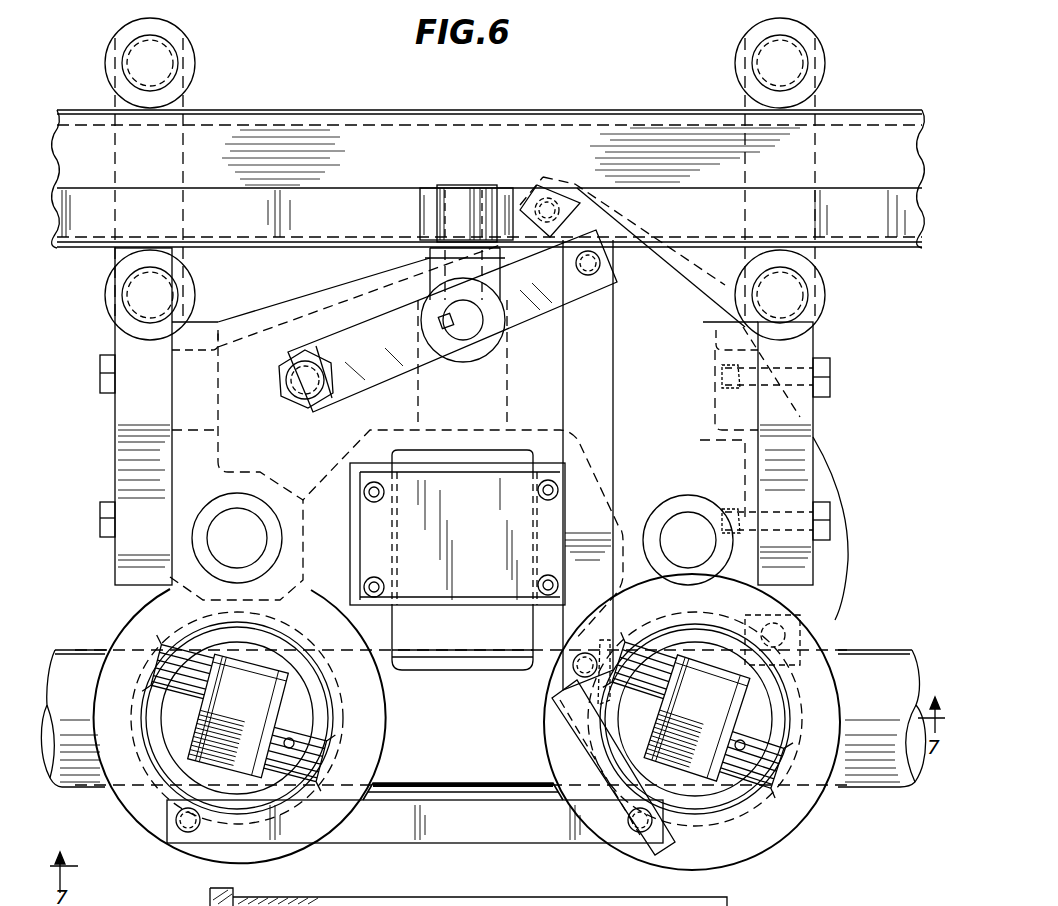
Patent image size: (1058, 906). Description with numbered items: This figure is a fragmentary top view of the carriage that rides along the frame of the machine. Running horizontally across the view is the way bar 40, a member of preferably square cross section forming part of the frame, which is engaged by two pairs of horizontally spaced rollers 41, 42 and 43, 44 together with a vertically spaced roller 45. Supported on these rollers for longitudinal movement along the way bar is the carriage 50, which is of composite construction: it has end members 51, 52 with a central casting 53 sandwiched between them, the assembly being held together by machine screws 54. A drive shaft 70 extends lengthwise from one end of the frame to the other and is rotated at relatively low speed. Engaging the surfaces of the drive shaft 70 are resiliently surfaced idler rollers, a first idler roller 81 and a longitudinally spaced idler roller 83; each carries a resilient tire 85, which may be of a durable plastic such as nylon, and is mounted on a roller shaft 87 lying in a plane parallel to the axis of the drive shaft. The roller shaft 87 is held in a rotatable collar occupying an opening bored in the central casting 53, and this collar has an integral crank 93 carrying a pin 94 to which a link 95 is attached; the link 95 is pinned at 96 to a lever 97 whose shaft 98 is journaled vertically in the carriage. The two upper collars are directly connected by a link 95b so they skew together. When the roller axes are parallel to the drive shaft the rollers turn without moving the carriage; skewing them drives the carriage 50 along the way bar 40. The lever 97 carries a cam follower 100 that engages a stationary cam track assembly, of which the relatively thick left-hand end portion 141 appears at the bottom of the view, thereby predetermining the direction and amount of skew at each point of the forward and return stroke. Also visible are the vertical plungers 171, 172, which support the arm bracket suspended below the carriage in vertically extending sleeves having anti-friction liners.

The way bar 40 is at (290, 135).
The roller 41 is at (823, 292).
The roller 42 is at (735, 68).
The roller 43 is at (105, 294).
The roller 44 is at (105, 63).
The roller 45 is at (428, 195).
The carriage 50 is at (870, 486).
The end member 51 is at (115, 437).
The end member 52 is at (808, 407).
The central casting 53 is at (454, 787).
The machine screws 54 is at (100, 372).
The drive shaft 70 is at (80, 786).
The idler roller 81 is at (720, 775).
The idler roller 83 is at (195, 725).
The tire 85 is at (690, 800).
The roller shaft 87 is at (838, 712).
The crank 93 is at (612, 650).
The pin 94 is at (570, 690).
The link 95 is at (605, 393).
The link 95b is at (385, 848).
The pin 96 is at (600, 263).
The lever 97 is at (386, 336).
The shaft 98 is at (465, 326).
The cam follower 100 is at (287, 380).
The left-hand end portion 141 is at (490, 898).
The vertical plunger 171 is at (240, 565).
The vertical plunger 172 is at (688, 520).